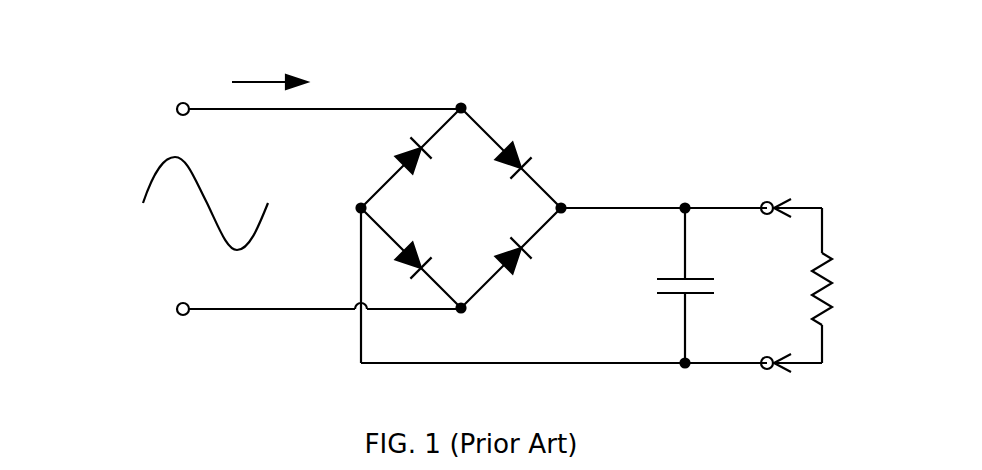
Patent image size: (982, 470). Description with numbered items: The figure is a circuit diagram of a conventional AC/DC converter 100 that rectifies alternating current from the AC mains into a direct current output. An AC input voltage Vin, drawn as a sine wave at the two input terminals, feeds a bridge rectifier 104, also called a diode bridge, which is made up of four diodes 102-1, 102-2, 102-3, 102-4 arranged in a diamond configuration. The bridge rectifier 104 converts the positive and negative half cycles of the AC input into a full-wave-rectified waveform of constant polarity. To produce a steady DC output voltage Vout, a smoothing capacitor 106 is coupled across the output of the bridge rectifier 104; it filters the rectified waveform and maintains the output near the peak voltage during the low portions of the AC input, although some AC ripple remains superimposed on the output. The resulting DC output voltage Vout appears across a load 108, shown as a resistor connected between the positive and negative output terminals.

The AC/DC converter 100 is at (456, 228).
The diode 102-1 is at (382, 156).
The diode 102-2 is at (540, 157).
The diode 102-3 is at (381, 259).
The diode 102-4 is at (541, 259).
The bridge rectifier 104 is at (365, 67).
The smoothing capacitor 106 is at (673, 286).
The load 108 is at (802, 285).